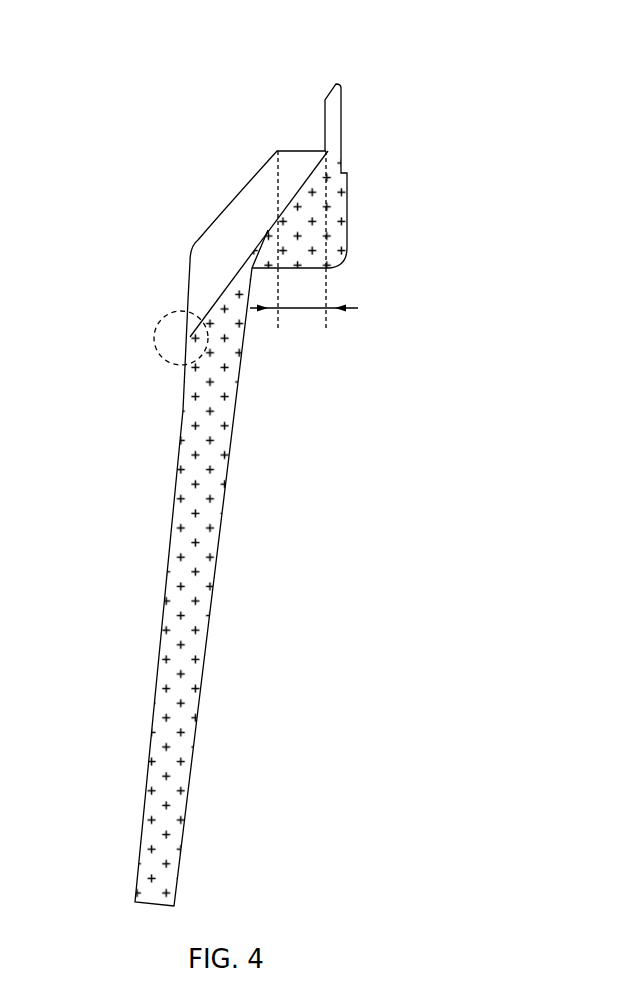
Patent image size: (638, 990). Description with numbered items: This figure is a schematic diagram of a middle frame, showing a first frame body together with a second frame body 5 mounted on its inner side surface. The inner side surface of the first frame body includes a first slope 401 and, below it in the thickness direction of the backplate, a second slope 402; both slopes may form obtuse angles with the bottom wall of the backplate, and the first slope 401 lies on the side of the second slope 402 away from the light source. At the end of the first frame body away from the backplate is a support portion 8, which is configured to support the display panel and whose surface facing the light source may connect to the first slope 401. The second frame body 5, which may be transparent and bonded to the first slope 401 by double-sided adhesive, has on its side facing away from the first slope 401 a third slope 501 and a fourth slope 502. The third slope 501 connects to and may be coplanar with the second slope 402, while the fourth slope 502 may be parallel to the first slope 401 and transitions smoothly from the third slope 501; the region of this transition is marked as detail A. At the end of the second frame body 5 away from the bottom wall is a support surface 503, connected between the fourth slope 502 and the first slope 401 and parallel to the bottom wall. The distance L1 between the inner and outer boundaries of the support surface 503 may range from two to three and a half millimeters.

The second frame body 5 is at (225, 248).
The support portion 8 is at (333, 126).
The first slope 401 is at (269, 231).
The second slope 402 is at (168, 545).
The third slope 501 is at (188, 293).
The fourth slope 502 is at (236, 202).
The support surface 503 is at (302, 151).
The detail region A is at (165, 350).
The distance L1 is at (304, 305).